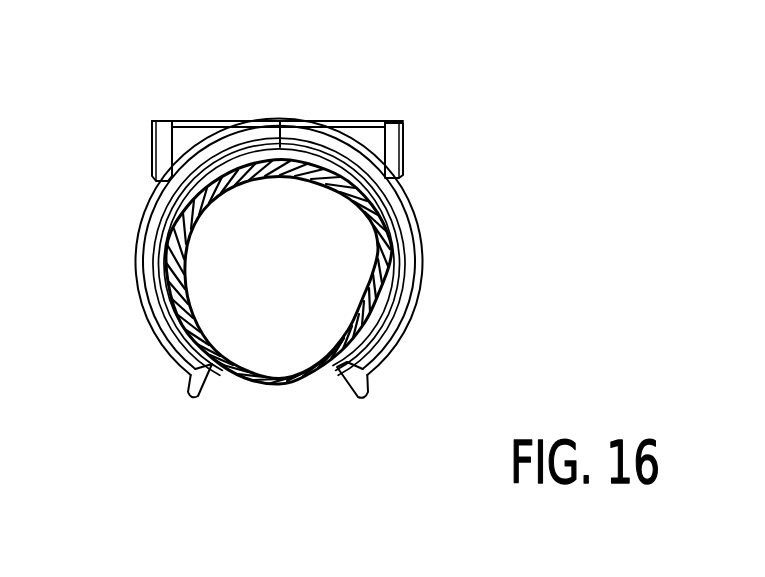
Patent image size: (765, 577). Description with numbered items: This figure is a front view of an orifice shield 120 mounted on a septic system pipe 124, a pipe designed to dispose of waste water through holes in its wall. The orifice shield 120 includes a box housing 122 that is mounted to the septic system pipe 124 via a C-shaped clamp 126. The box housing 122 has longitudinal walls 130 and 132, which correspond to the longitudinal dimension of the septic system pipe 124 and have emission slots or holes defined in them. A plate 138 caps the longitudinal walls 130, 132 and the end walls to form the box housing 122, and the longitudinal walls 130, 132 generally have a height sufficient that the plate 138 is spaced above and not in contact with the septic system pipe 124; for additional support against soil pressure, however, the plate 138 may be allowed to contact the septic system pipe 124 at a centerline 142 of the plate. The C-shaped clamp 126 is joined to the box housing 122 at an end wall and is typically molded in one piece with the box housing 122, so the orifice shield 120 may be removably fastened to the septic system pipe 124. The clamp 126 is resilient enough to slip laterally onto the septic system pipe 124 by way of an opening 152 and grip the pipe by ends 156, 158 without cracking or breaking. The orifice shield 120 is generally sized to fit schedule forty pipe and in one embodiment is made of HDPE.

The orifice shield 120 is at (470, 50).
The box housing 122 is at (400, 125).
The septic system pipe 124 is at (358, 198).
The C-shaped clamp 126 is at (408, 200).
The longitudinal wall 130 is at (403, 158).
The longitudinal wall 132 is at (157, 147).
The plate 138 is at (200, 119).
The centerline 142 is at (283, 146).
The opening 152 is at (233, 395).
The end 156 is at (223, 350).
The end 158 is at (340, 378).